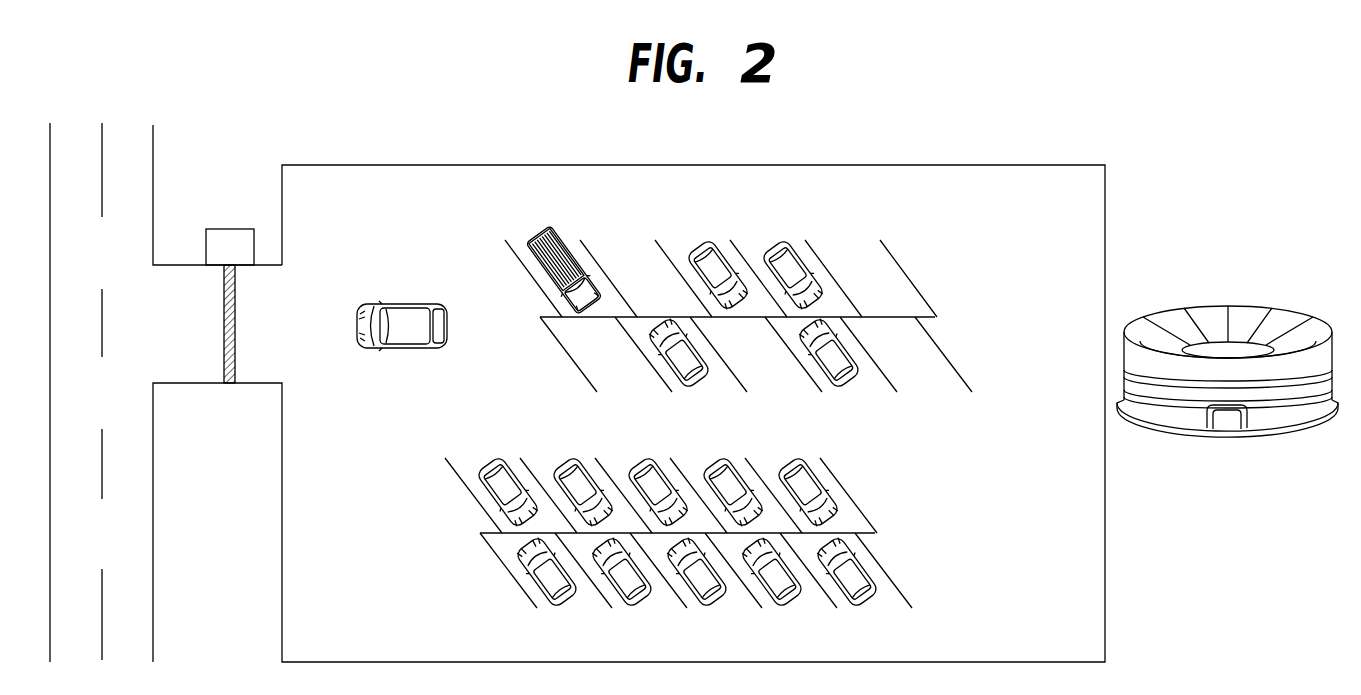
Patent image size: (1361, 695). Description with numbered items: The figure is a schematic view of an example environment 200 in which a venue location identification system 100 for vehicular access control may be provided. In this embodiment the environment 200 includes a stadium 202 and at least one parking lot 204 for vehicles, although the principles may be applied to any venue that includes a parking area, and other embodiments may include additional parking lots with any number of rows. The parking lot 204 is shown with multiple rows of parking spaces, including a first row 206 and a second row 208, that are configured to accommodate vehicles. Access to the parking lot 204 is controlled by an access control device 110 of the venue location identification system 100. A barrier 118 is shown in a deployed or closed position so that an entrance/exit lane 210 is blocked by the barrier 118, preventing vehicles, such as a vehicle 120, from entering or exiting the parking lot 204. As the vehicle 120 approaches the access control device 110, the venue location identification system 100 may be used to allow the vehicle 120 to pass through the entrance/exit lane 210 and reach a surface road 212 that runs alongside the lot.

The venue location identification system 100 is at (246, 243).
The access control device 110 is at (213, 229).
The barrier 118 is at (237, 310).
The vehicle 120 is at (397, 304).
The environment 200 is at (1062, 94).
The stadium 202 is at (1293, 433).
The parking lot 204 is at (1073, 235).
The first row 206 is at (927, 263).
The second row 208 is at (910, 553).
The entrance/exit lane 210 is at (194, 346).
The surface road 212 is at (94, 416).